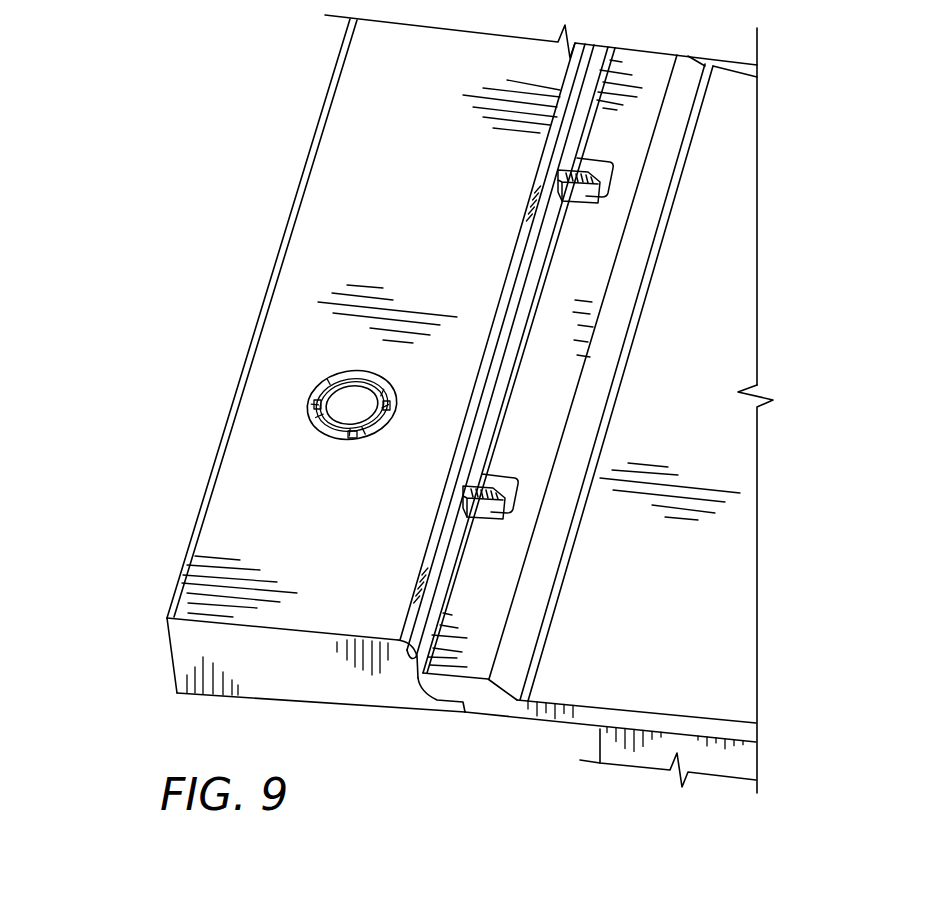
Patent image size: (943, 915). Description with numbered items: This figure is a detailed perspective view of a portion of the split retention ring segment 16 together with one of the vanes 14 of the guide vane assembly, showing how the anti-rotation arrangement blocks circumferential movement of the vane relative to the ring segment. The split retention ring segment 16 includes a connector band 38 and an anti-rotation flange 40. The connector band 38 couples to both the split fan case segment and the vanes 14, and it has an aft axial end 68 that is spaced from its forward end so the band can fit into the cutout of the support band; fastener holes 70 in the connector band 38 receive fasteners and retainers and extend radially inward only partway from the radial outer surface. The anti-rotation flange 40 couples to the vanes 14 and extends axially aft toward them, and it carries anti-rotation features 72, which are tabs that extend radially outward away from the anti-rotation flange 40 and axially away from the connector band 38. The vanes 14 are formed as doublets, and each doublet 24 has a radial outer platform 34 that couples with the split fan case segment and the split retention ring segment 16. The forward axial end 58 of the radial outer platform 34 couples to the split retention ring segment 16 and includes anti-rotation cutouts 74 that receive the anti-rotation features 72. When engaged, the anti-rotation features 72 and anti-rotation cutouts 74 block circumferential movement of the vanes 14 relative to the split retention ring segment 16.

The split retention ring segment 16 is at (135, 392).
The connector band 38 is at (342, 202).
The fastener holes 70 is at (350, 407).
The anti-rotation cutouts 74 is at (597, 168).
The anti-rotation features 72 is at (571, 198).
The aft axial end 68 is at (417, 660).
The anti-rotation flange 40 is at (448, 705).
The vanes 14 is at (491, 768).
The radial outer platform 34 is at (506, 738).
The forward axial end 58 is at (535, 705).
The doublet 24 is at (553, 787).